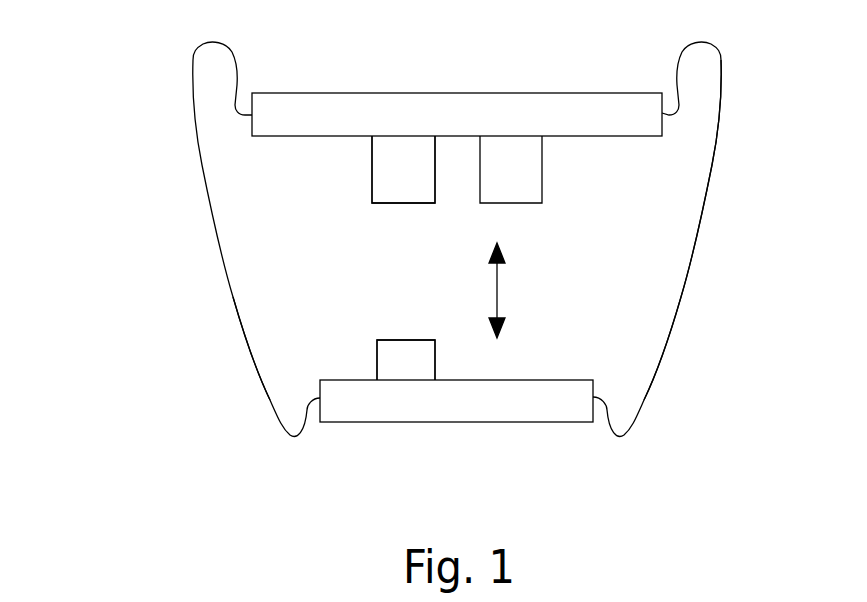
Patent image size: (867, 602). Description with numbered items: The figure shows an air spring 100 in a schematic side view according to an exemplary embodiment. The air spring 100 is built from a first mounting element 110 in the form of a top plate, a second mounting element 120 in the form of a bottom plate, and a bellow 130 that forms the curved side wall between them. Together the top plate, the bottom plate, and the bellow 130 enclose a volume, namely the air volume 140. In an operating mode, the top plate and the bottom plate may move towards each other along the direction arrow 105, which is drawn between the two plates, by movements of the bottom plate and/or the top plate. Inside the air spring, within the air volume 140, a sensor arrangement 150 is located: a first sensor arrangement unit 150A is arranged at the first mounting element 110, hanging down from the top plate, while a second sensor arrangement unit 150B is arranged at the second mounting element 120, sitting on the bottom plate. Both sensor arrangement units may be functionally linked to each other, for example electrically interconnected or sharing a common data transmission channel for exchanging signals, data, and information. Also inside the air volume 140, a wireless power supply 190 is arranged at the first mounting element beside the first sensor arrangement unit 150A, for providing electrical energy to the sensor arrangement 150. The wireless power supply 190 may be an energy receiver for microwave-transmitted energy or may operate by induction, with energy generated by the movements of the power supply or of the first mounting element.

The air spring 100 is at (153, 183).
The direction arrow 105 is at (500, 288).
The first mounting element 110 is at (465, 110).
The second mounting element 120 is at (553, 410).
The bellow 130 is at (700, 225).
The air volume 140 is at (277, 297).
The sensor arrangement 150 is at (403, 258).
The first sensor arrangement unit 150A is at (389, 170).
The second sensor arrangement unit 150B is at (398, 355).
The wireless power supply 190 is at (528, 170).